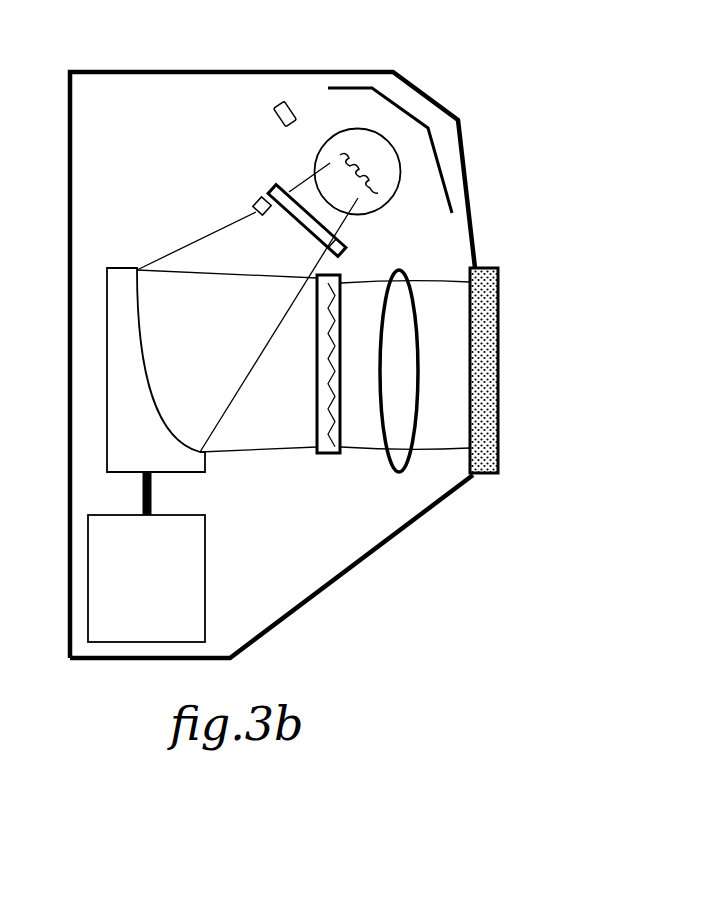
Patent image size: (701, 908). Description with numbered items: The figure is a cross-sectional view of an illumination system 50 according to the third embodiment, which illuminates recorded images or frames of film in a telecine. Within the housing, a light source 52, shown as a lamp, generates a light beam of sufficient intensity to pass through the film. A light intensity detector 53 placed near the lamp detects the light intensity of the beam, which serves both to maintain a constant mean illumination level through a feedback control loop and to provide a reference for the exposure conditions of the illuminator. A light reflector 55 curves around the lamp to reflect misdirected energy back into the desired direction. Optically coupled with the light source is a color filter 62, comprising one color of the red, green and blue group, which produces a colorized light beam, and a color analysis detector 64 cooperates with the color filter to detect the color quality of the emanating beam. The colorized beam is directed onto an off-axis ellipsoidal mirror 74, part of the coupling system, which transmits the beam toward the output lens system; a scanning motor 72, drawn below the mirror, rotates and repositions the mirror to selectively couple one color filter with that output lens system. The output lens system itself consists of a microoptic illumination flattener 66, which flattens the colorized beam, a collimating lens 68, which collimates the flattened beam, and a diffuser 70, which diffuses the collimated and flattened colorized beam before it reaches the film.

The illumination system 50 is at (486, 165).
The first light source 52 is at (390, 190).
The light intensity detector 53 is at (279, 104).
The light reflector 55 is at (420, 92).
The third color filter 62 is at (290, 180).
The color analysis detector 64 is at (256, 203).
The microoptic illumination flattener 66 is at (327, 453).
The collimating lens 68 is at (390, 457).
The diffuser 70 is at (485, 265).
The scanning motor 72 is at (129, 594).
The off-axis ellipsoidal mirror 74 is at (150, 457).